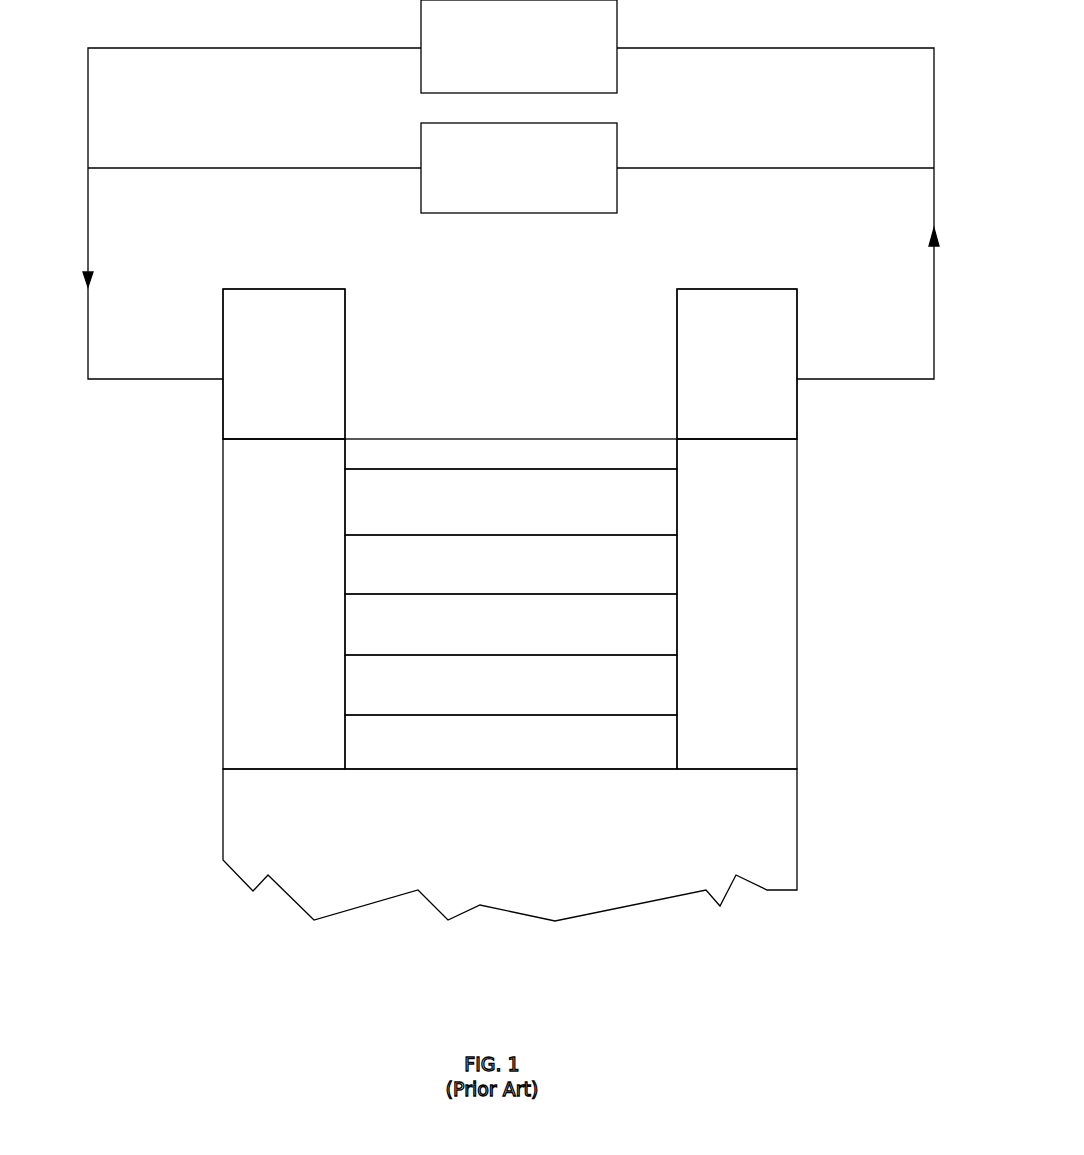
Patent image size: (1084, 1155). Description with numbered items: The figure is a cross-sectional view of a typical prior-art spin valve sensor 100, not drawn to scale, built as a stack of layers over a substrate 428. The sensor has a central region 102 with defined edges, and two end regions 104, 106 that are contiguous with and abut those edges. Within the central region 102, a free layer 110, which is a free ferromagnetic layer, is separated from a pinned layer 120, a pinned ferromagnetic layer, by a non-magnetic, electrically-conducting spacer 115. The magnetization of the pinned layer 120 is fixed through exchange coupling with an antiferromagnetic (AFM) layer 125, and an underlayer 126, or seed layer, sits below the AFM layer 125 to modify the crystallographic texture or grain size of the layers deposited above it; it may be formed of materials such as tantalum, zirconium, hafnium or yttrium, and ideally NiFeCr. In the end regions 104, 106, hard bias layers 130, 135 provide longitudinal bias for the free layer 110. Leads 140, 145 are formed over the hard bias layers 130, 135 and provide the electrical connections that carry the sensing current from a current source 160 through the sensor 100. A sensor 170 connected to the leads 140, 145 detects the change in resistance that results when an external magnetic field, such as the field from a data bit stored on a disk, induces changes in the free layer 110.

The spin valve sensor 100 is at (328, 981).
The central region 102 is at (678, 273).
The end region 104 is at (345, 273).
The end region 106 is at (797, 273).
The free layer 110 is at (650, 504).
The spacer 115 is at (662, 558).
The pinned layer 120 is at (665, 625).
The antiferromagnetic (AFM) layer 125 is at (662, 680).
The underlayer 126 is at (662, 732).
The hard bias layer 130 is at (283, 755).
The hard bias layer 135 is at (767, 755).
The lead 140 is at (223, 413).
The lead 145 is at (797, 410).
The current source 160 is at (421, 138).
The sensor 170 is at (617, 78).
The substrate 428 is at (767, 875).